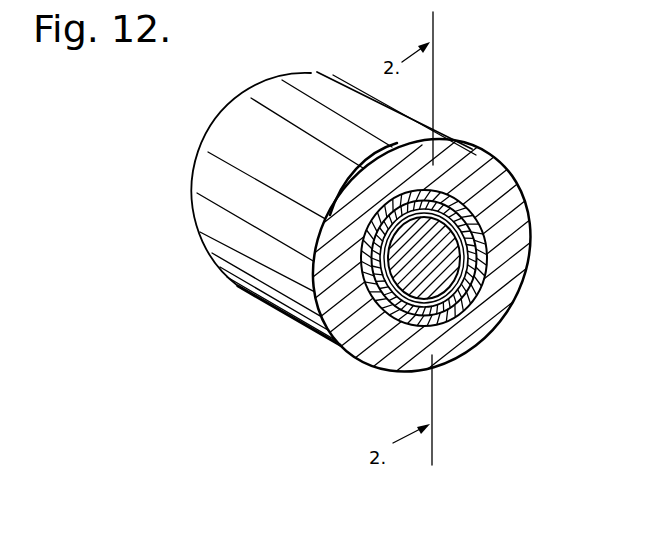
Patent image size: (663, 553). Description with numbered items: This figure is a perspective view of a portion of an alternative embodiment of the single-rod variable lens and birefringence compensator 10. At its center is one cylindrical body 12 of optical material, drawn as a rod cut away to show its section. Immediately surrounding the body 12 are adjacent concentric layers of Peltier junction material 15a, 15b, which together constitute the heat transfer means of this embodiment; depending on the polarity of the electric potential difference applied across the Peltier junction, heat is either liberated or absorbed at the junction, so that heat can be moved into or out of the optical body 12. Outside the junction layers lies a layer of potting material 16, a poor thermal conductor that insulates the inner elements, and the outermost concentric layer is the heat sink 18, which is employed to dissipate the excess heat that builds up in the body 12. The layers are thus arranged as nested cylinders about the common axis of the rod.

The single-rod variable lens and birefringence compensator 10 is at (116, 115).
The cylindrical body of optical material 12 is at (448, 272).
The layer of Peltier junction material 15a is at (476, 265).
The layer of Peltier junction material 15b is at (470, 291).
The layer of potting material 16 is at (482, 242).
The heat sink 18 is at (502, 184).